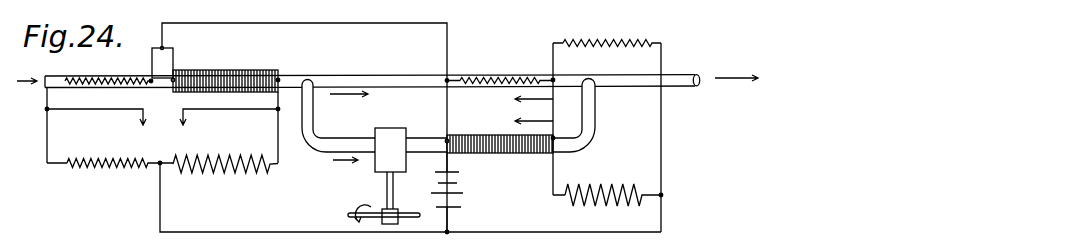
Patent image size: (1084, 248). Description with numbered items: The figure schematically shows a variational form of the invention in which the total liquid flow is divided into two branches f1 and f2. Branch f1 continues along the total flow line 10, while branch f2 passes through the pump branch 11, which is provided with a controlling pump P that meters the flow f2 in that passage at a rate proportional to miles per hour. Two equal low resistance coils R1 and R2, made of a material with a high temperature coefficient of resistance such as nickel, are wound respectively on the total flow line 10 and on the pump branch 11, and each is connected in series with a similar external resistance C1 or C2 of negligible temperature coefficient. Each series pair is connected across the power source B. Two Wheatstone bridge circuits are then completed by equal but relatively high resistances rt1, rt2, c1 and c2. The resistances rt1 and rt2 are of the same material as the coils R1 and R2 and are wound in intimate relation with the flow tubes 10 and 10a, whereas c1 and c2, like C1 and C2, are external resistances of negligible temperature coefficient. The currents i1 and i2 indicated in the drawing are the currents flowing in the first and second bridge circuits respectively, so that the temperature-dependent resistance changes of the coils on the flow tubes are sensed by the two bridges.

The total flow line 10 is at (143, 89).
The flow tube 10a is at (383, 75).
The pump branch 11 is at (313, 138).
The bridge resistance rt1 is at (109, 72).
The low resistance coil R1 is at (225, 72).
The external bridge resistance c1 is at (110, 177).
The external resistance C1 is at (225, 179).
The current i1 is at (162, 120).
The flow branch f1 is at (355, 99).
The flow branch f2 is at (335, 166).
The controlling pump P is at (397, 176).
The power source B is at (455, 192).
The low resistance coil R2 is at (518, 155).
The bridge resistance rt2 is at (500, 72).
The current i2 is at (526, 110).
The external bridge resistance c2 is at (607, 35).
The external resistance C2 is at (607, 187).